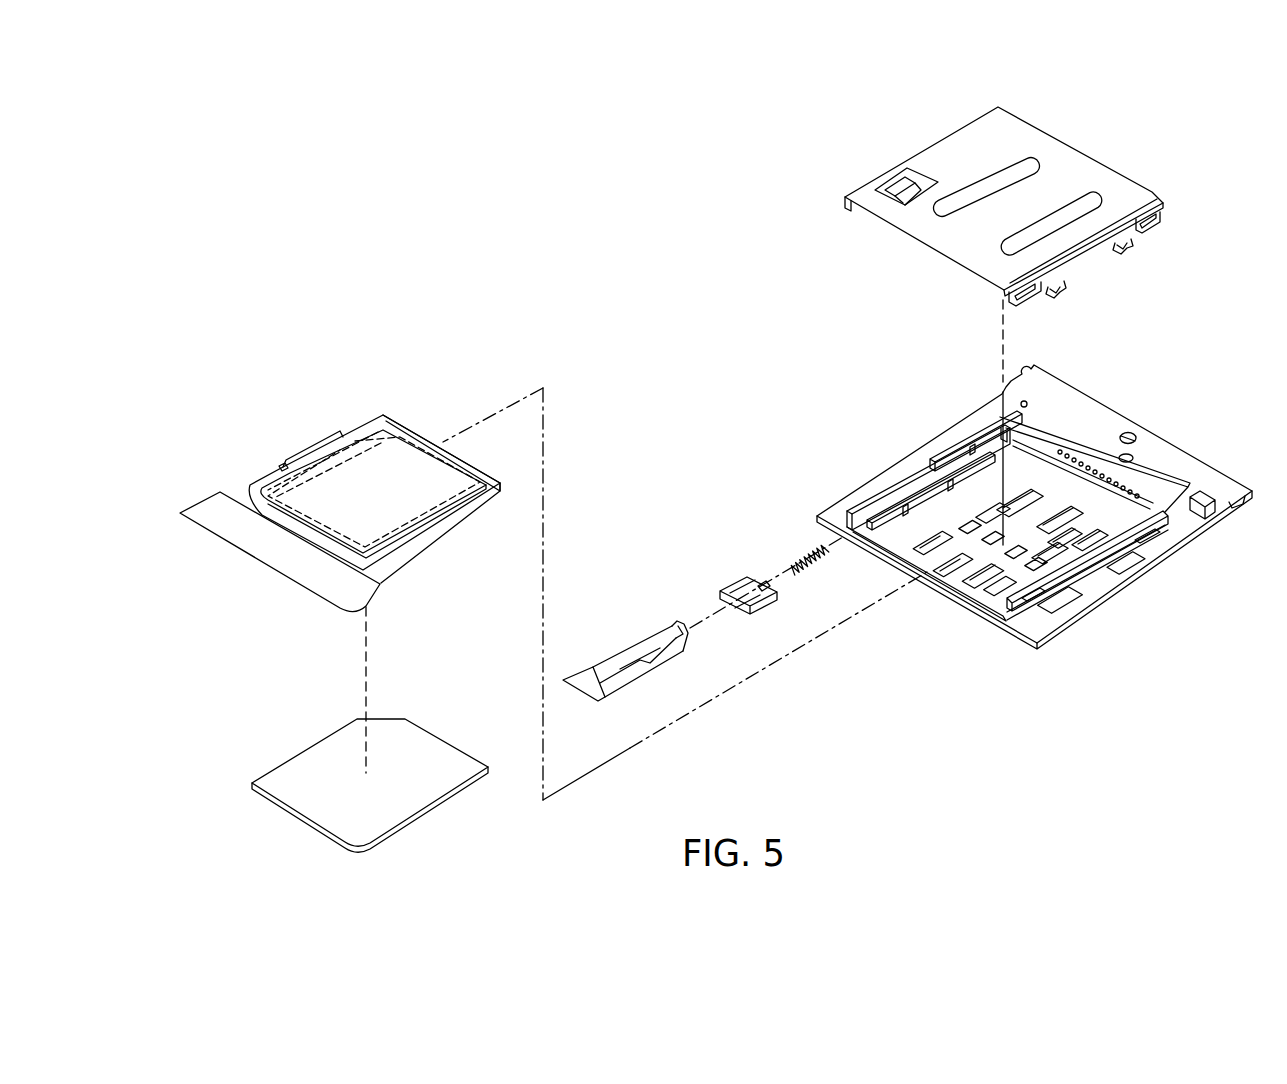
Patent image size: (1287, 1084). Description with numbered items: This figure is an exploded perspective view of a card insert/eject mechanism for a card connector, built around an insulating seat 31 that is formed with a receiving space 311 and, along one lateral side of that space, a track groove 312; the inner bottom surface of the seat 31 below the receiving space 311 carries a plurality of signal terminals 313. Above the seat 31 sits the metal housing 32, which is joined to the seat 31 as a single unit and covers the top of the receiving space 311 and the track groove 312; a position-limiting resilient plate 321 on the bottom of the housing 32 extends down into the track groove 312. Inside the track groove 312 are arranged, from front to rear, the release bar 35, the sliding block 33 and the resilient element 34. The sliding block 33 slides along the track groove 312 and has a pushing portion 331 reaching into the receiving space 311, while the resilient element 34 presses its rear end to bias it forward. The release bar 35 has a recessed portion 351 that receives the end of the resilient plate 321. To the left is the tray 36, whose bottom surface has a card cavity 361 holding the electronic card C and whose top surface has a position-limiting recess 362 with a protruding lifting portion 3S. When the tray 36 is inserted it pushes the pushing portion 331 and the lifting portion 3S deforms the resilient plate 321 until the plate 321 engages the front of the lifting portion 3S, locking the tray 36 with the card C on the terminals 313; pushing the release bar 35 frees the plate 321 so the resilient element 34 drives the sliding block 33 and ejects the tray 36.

The insulating seat 31 is at (1034, 510).
The receiving space 311 is at (1103, 507).
The track groove 312 is at (862, 538).
The signal terminals 313 is at (1077, 547).
The metal housing 32 is at (1004, 206).
The position-limiting resilient plate 321 is at (910, 188).
The sliding block 33 is at (724, 551).
The pushing portion 331 is at (765, 586).
The resilient element 34 is at (810, 550).
The release bar 35 is at (625, 622).
The recessed portion 351 is at (657, 633).
The tray 36 is at (344, 484).
The card cavity 361 is at (377, 517).
The position-limiting recess 362 is at (352, 421).
The lifting portion 3S is at (310, 455).
The electronic card C is at (308, 768).